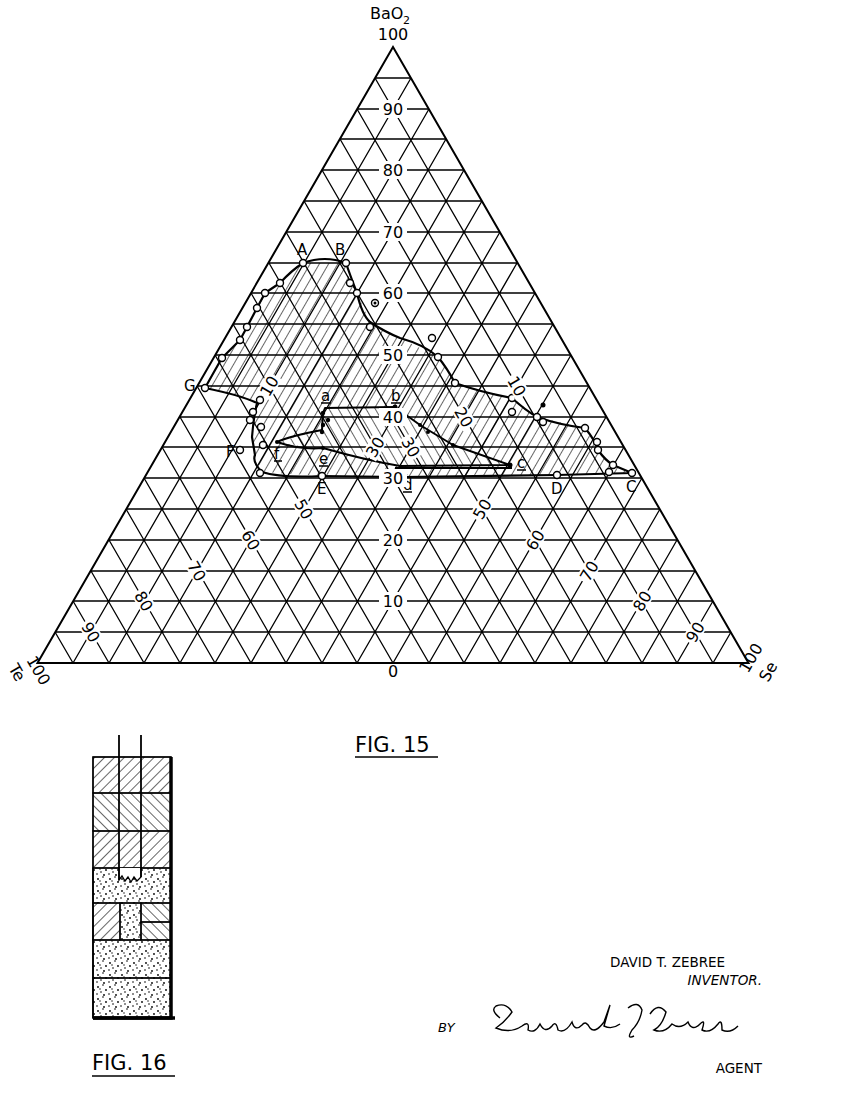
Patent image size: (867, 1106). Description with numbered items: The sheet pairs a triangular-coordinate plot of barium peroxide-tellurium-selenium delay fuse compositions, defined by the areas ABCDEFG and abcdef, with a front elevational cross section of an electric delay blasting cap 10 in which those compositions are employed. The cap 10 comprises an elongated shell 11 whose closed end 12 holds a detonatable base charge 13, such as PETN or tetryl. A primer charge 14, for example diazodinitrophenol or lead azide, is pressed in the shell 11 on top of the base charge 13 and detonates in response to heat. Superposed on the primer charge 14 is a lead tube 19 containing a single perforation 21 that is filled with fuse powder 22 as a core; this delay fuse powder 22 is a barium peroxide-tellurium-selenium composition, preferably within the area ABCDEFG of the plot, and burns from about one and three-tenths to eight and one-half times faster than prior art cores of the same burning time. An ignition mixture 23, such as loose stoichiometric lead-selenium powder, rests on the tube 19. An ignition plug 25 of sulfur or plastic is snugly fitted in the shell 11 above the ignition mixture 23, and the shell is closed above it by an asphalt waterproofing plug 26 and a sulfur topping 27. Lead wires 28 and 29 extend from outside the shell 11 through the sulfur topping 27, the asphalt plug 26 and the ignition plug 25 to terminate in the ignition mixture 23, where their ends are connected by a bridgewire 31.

The electric delay blasting cap 10 is at (92, 851).
The elongated shell 11 is at (93, 890).
The closed end 12 is at (163, 1019).
The base charge 13 is at (106, 1002).
The primer charge 14 is at (106, 963).
The lead tube 19 is at (98, 922).
The perforation 21 is at (158, 914).
The fuse powder 22 is at (160, 925).
The ignition mixture 23 is at (165, 888).
The ignition plug 25 is at (155, 853).
The asphalt waterproofing plug 26 is at (172, 807).
The sulfur topping 27 is at (172, 772).
The lead wire 28 is at (141, 742).
The lead wire 29 is at (119, 750).
The bridgewire 31 is at (150, 880).